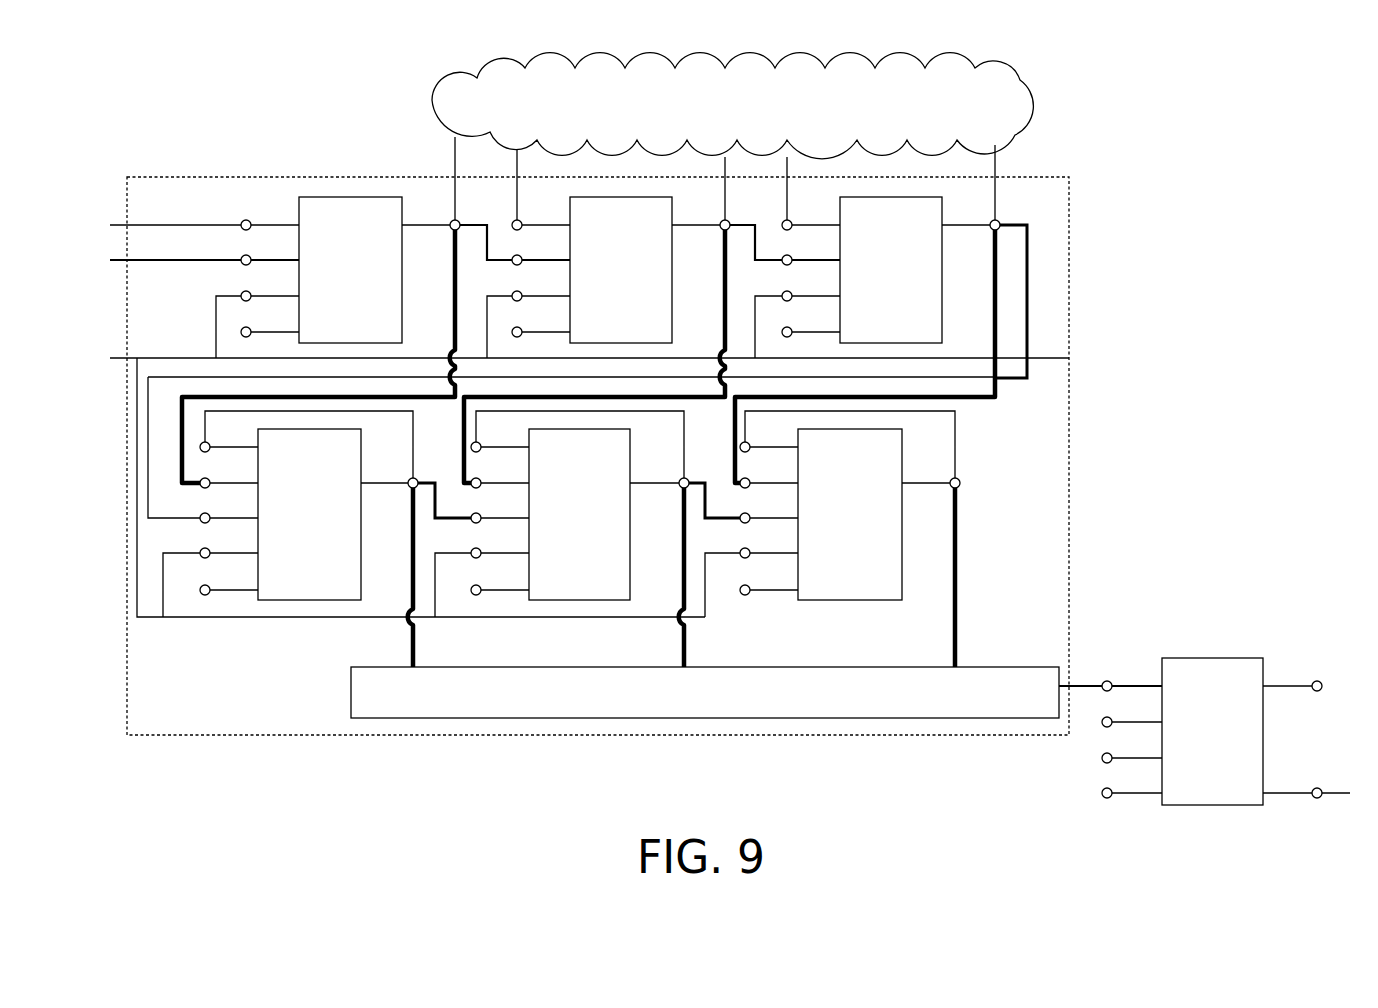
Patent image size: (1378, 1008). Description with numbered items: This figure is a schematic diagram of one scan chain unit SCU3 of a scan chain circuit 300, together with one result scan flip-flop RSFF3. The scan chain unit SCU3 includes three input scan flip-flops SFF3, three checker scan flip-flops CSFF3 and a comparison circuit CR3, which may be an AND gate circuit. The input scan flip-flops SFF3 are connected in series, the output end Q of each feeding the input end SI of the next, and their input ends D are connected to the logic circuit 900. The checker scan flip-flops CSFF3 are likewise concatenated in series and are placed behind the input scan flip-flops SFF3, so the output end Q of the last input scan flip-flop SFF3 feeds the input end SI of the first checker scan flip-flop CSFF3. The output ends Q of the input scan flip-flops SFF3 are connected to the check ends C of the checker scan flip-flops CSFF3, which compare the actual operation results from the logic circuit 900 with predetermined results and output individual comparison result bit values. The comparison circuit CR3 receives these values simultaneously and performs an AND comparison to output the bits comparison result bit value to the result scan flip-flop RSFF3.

The logic circuit 900 is at (732, 139).
The scan chain circuit 300 is at (701, 491).
The scan chain unit SCU3 is at (669, 456).
The input scan flip-flop SFF3 is at (568, 340).
The checker scan flip-flop CSFF3 is at (551, 522).
The comparison circuit CR3 is at (705, 692).
The result scan flip-flop RSFF3 is at (1180, 658).